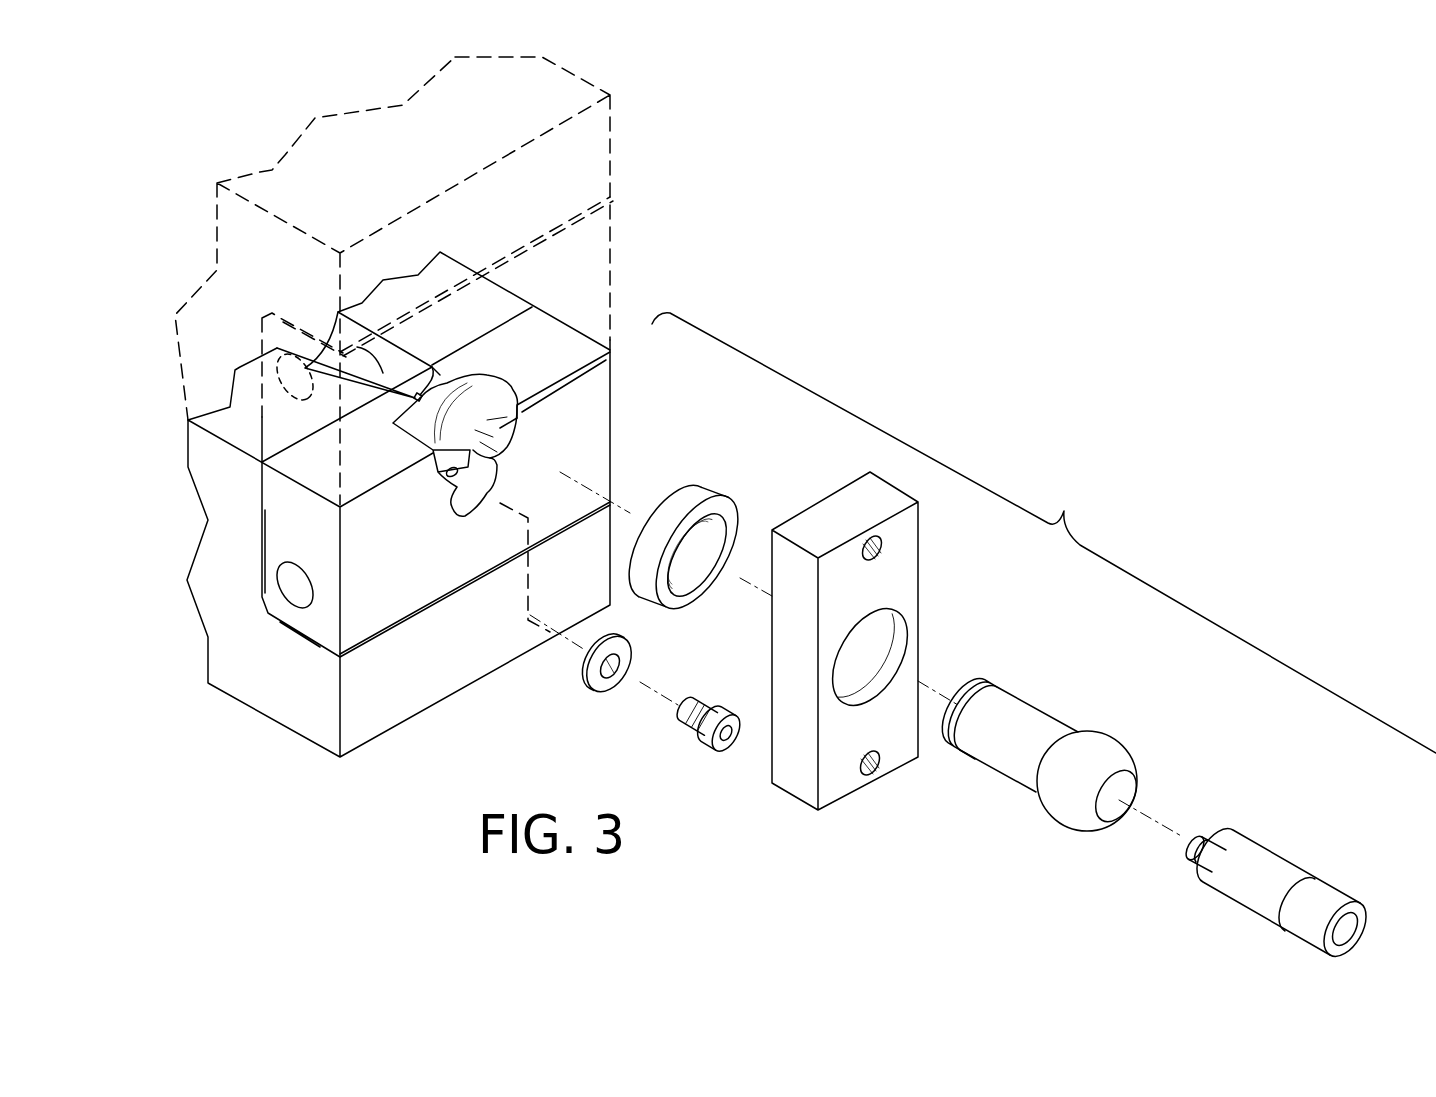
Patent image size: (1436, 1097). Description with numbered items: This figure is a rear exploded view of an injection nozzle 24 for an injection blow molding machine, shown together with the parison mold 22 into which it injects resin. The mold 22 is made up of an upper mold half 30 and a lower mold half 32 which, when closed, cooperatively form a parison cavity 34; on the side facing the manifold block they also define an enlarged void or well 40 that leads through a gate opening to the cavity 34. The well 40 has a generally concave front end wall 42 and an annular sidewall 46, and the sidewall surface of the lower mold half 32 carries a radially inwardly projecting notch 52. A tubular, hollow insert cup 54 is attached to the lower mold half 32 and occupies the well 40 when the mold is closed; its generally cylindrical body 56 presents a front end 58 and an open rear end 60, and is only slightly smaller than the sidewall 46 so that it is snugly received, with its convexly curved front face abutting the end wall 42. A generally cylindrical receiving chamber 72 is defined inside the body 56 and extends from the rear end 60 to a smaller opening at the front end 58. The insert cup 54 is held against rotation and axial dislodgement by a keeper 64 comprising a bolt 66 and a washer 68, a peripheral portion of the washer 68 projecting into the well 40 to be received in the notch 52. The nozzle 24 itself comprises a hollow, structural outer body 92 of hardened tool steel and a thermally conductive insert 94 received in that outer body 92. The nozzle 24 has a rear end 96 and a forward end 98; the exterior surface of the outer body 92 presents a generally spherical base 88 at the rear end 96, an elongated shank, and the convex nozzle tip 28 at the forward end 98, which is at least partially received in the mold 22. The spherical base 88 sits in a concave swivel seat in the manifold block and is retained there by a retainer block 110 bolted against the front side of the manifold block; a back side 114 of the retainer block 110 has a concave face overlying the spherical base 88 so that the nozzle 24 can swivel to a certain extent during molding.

The parison mold 22 is at (646, 145).
The injection nozzle 24 is at (1346, 663).
The nozzle tip 28 is at (990, 687).
The upper mold half 30 is at (570, 287).
The lower mold half 32 is at (412, 583).
The parison cavity 34 is at (357, 347).
The well 40 is at (400, 449).
The front end wall 42 is at (478, 396).
The annular sidewall 46 is at (610, 352).
The notch 52 is at (543, 453).
The insert cup 54 is at (681, 531).
The body 56 is at (690, 507).
The front end 58 is at (658, 507).
The rear end 60 is at (720, 530).
The keeper 64 is at (645, 713).
The bolt 66 is at (707, 727).
The washer 68 is at (602, 682).
The receiving chamber 72 is at (701, 593).
The spherical base 88 is at (1103, 757).
The structural outer body 92 is at (1052, 750).
The thermally conductive insert 94 is at (1314, 823).
The rear end 96 is at (1120, 821).
The forward end 98 is at (951, 762).
The retainer block 110 is at (894, 662).
The back side 114 is at (840, 745).